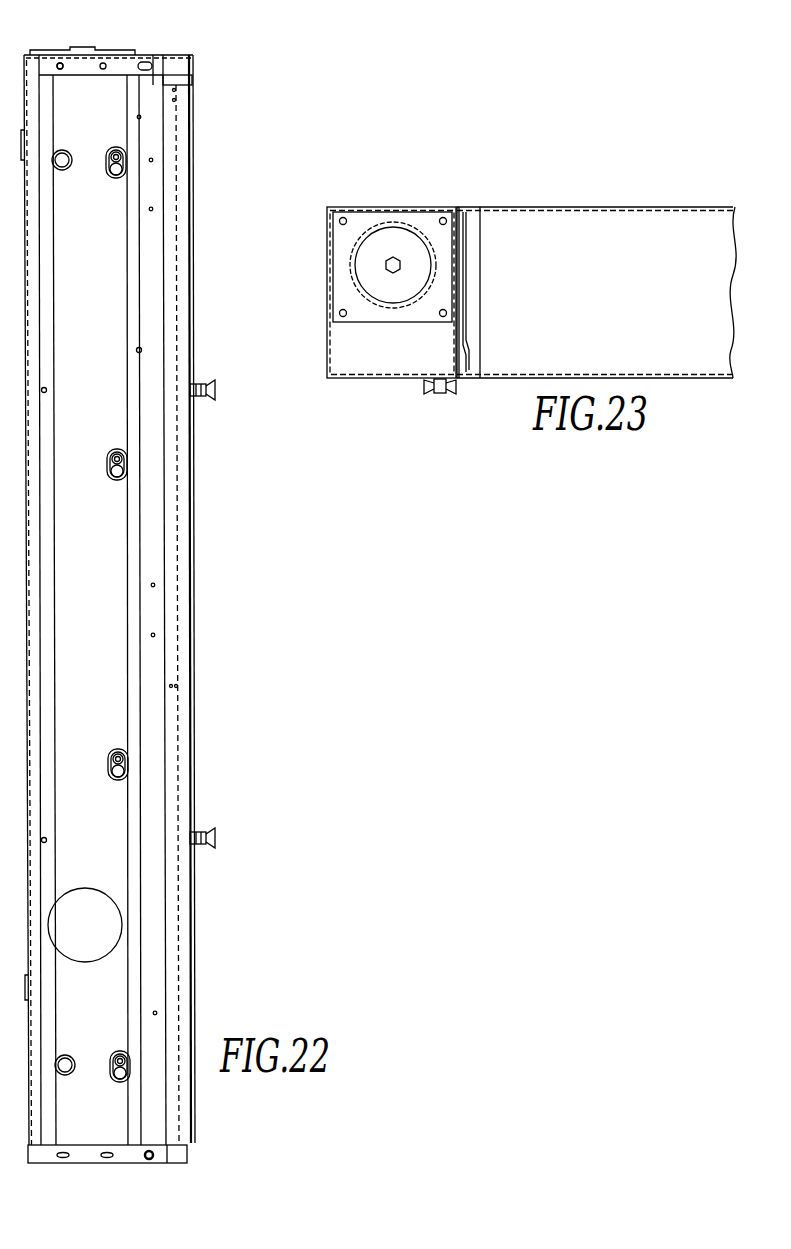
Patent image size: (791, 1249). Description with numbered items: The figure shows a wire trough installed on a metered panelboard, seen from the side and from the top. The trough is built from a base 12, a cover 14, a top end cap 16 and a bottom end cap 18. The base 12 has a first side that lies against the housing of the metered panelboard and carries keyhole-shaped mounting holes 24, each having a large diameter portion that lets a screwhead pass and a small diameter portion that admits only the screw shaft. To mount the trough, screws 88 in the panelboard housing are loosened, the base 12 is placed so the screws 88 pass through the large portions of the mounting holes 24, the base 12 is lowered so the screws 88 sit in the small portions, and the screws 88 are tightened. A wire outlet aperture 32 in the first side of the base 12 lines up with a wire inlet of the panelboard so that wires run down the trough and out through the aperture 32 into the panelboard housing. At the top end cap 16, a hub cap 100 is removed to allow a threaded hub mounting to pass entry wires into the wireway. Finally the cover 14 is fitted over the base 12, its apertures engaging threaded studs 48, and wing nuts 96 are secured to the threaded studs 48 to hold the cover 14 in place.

In FIG. 22, the base 12 is at (190, 298).
In FIG. 22, the cover 14 is at (153, 55).
In FIG. 23, the cover 14 is at (328, 332).
In FIG. 22, the top end cap 16 is at (58, 63).
In FIG. 23, the top end cap 16 is at (413, 332).
In FIG. 22, the bottom end cap 18 is at (155, 1164).
In FIG. 22, the mounting hole 24 is at (112, 176).
In FIG. 22, the wire outlet aperture 32 is at (92, 937).
In FIG. 22, the threaded stud 48 is at (207, 394).
In FIG. 22, the screw 88 is at (112, 152).
In FIG. 22, the wing nut 96 is at (205, 384).
In FIG. 23, the hub cap 100 is at (378, 238).